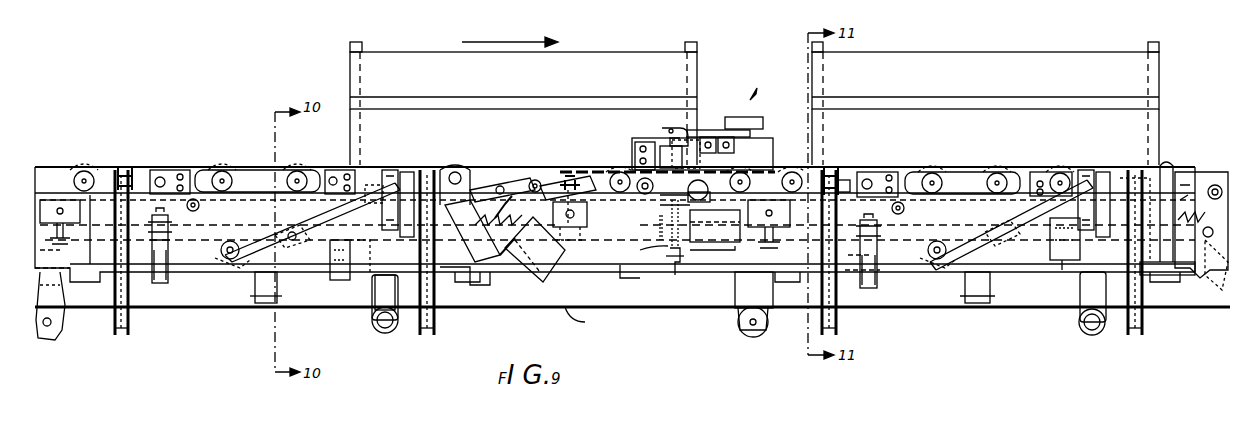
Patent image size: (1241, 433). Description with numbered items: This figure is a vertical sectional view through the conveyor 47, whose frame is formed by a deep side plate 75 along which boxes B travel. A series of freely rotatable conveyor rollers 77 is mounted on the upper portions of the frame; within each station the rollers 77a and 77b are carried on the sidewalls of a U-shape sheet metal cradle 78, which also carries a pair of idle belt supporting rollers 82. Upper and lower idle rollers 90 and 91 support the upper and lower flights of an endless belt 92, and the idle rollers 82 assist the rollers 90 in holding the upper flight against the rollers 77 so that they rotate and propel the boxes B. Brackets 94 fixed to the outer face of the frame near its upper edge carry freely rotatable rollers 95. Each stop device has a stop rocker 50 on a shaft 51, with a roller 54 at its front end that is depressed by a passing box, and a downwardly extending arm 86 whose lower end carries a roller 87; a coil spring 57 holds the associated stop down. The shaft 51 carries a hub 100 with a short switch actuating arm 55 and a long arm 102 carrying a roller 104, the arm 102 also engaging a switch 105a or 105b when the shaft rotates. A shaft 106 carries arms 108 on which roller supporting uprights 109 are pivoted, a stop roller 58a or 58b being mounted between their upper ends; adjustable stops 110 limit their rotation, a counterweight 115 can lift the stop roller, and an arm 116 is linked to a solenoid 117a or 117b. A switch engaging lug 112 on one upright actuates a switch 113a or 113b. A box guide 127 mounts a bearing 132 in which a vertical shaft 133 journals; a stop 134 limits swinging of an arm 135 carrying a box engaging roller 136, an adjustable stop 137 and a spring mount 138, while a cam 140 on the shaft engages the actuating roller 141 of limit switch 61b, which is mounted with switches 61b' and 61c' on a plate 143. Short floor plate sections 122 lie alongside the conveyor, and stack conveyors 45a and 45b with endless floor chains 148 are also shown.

The box B is at (352, 69).
The stack conveyor 45a is at (126, 170).
The stack conveyor 45b is at (832, 170).
The conveyor 47 is at (757, 92).
The stop rocker 50 is at (75, 252).
The shaft 51 is at (220, 244).
The roller 54 is at (418, 175).
The switch actuating arm 55 is at (285, 230).
The coil spring 57 is at (666, 228).
The stop roller 58a is at (458, 170).
The stop roller 58b is at (1170, 160).
The limit switch 61b is at (652, 245).
The limit switch 61b' is at (283, 287).
The limit switch 61c' is at (993, 287).
The side plate 75 is at (634, 279).
The conveyor roller 77 is at (85, 170).
The conveyor roller 77a is at (223, 170).
The conveyor roller 77b is at (1058, 170).
The cradle 78 is at (188, 255).
The idle belt supporting roller 82 is at (200, 204).
The arm 86 is at (372, 326).
The roller 87 is at (388, 333).
The upper idle roller 90 is at (780, 252).
The lower idle roller 91 is at (66, 321).
The endless belt 92 is at (598, 208).
The bracket 94 is at (179, 171).
The roller 95 is at (250, 175).
The hub 100 is at (228, 260).
The long arm 102 is at (294, 222).
The roller 104 is at (392, 170).
The switch 105a is at (365, 290).
The switch 105b is at (1072, 284).
The shaft 106 is at (566, 176).
The arm 108 is at (536, 178).
The roller supporting upright 109 is at (505, 176).
The adjustable stop 110 is at (1212, 180).
The switch engaging lug 112 is at (452, 276).
The switch 113a is at (388, 280).
The switch 113b is at (1163, 276).
The counterweight 115 is at (575, 232).
The arm 116 is at (498, 262).
The solenoid 117a is at (565, 256).
The solenoid 117b is at (1215, 278).
The floor plate section 122 is at (612, 186).
The box guide 127 is at (774, 148).
The bearing 132 is at (642, 142).
The vertical shaft 133 is at (640, 195).
The stop 134 is at (677, 124).
The arm 135 is at (732, 132).
The box engaging roller 136 is at (758, 117).
The adjustable stop 137 is at (720, 152).
The adjustable spring mount 138 is at (708, 130).
The switch actuating cam 140 is at (668, 212).
The actuating roller 141 is at (695, 196).
The plate 143 is at (710, 247).
The endless floor chain 148 is at (122, 333).